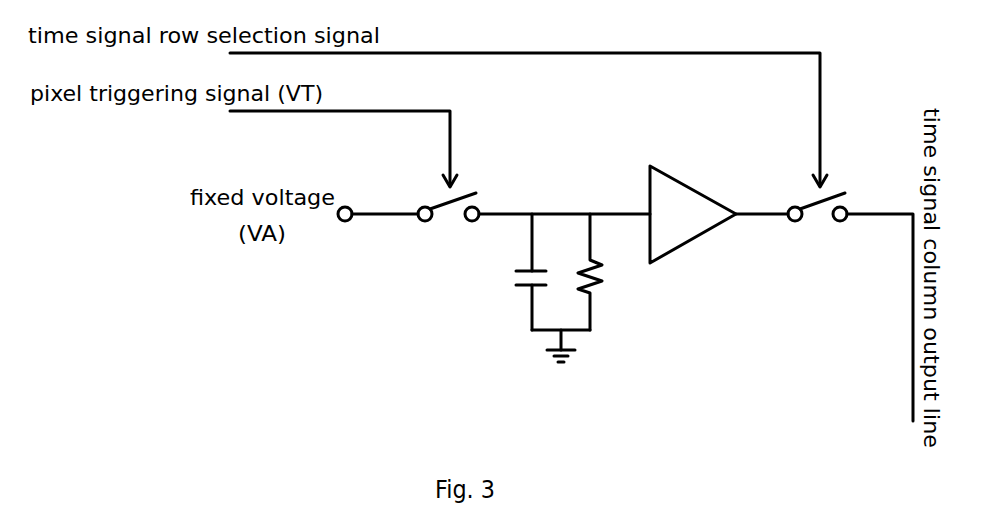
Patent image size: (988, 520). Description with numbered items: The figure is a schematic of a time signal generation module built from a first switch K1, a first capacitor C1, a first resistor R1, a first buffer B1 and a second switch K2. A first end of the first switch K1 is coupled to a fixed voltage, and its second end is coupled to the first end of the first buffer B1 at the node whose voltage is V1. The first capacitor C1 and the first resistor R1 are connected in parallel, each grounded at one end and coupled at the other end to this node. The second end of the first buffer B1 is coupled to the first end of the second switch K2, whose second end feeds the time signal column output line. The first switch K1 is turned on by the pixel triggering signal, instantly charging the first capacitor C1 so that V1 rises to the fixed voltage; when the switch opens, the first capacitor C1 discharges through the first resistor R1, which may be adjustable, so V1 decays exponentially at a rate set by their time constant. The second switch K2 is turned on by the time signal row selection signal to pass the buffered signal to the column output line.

The first switch K1 is at (448, 219).
The second switch K2 is at (817, 222).
The first capacitor C1 is at (512, 272).
The first resistor R1 is at (609, 272).
The first buffer B1 is at (693, 214).
The node voltage V1 is at (564, 199).